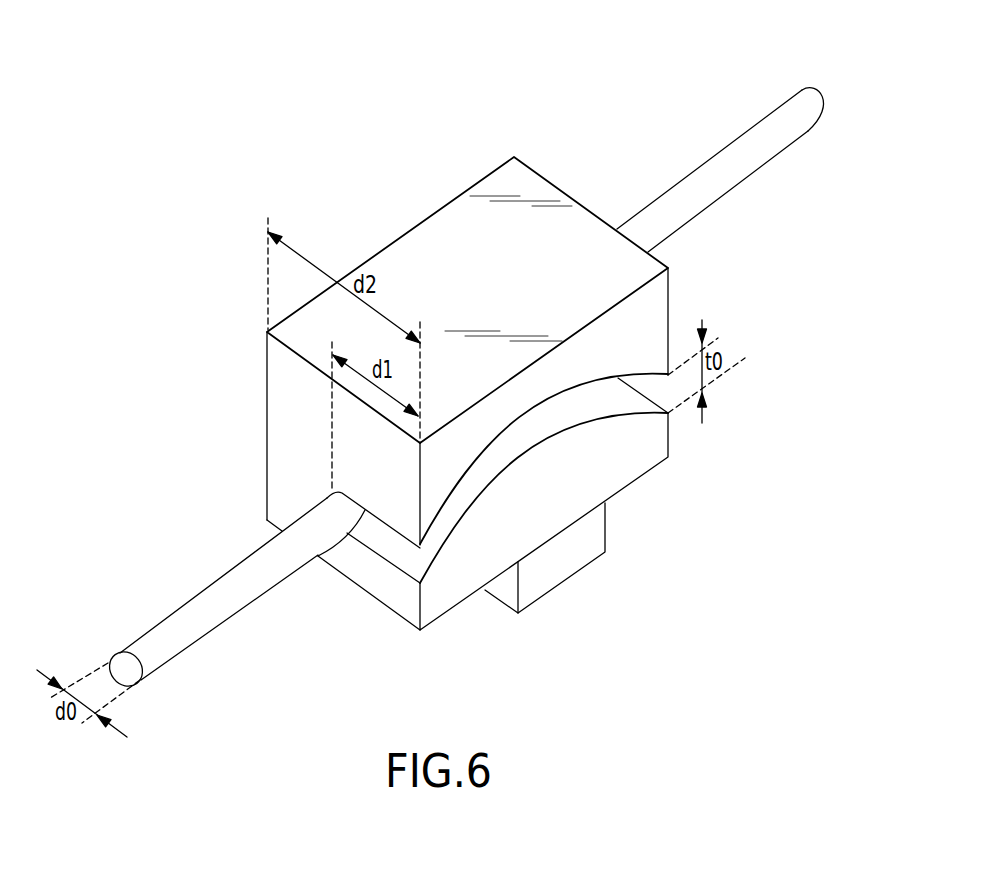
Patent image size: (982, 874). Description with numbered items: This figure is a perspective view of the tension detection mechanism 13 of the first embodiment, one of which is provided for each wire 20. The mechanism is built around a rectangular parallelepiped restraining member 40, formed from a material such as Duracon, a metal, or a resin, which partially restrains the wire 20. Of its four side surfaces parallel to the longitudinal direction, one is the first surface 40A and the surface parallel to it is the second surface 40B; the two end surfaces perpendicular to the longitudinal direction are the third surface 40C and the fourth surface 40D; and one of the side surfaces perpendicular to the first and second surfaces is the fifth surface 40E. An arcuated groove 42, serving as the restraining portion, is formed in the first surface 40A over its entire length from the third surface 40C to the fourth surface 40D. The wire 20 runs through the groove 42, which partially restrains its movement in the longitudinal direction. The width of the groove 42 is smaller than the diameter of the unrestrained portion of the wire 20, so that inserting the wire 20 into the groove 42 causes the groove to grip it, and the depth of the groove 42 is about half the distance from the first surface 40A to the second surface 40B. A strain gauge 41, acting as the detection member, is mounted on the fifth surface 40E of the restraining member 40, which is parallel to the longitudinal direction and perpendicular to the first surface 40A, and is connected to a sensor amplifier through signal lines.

The tension detection mechanism 13 is at (534, 110).
The wire 20 is at (760, 155).
The restraining member 40 is at (440, 227).
The first surface 40A is at (445, 588).
The second surface 40B is at (267, 405).
The third surface 40C is at (278, 487).
The fourth surface 40D is at (573, 195).
The fifth surface 40E is at (465, 590).
The strain gauge 41 is at (568, 558).
The arcuated groove 42 is at (625, 403).